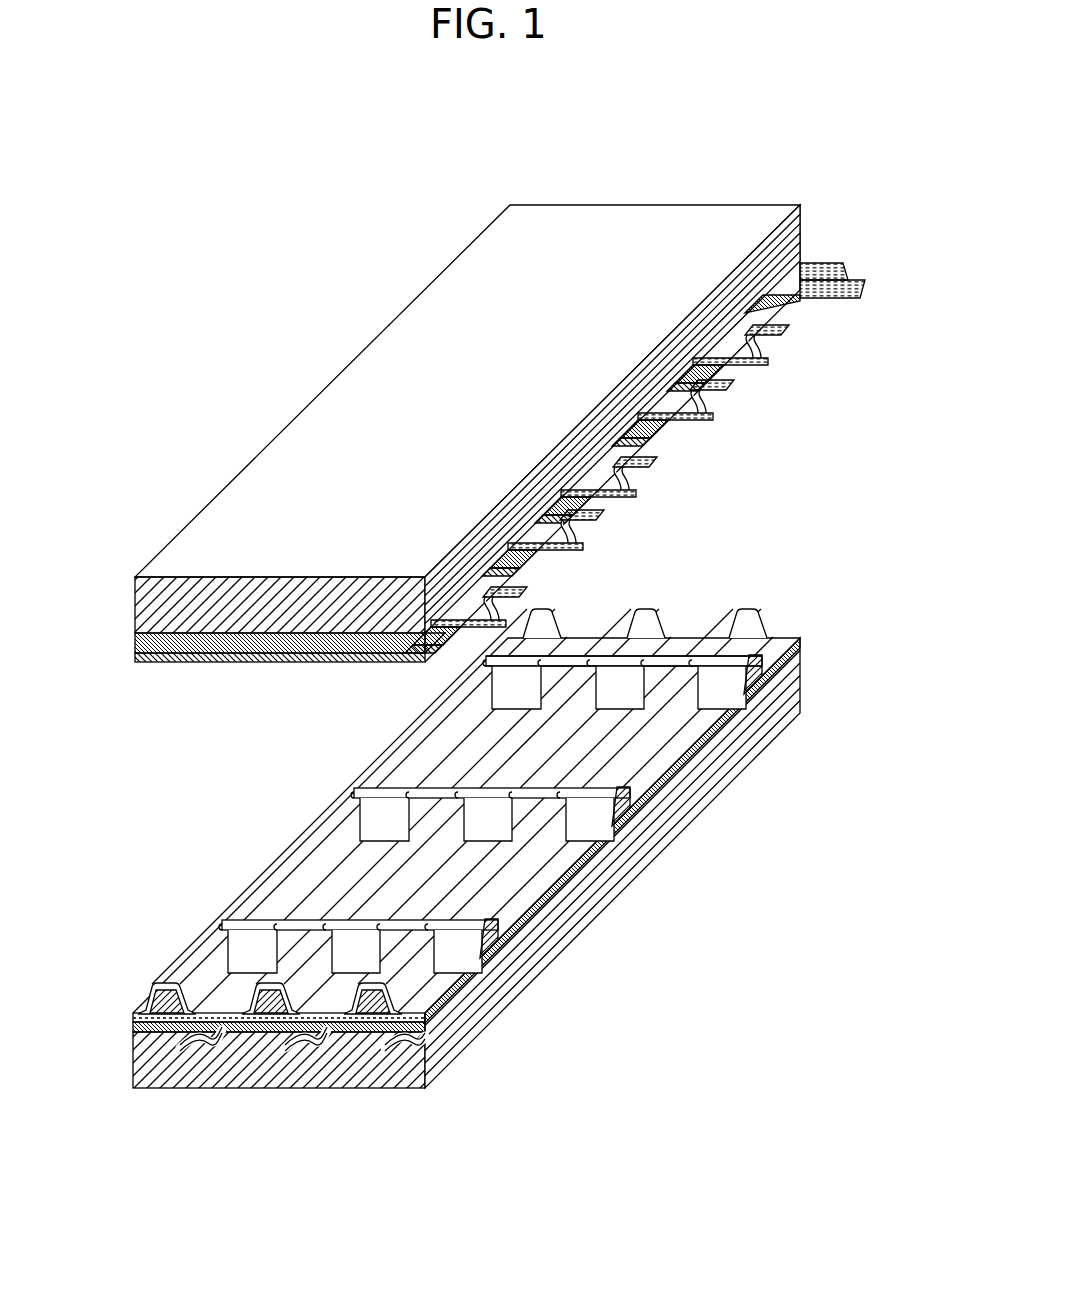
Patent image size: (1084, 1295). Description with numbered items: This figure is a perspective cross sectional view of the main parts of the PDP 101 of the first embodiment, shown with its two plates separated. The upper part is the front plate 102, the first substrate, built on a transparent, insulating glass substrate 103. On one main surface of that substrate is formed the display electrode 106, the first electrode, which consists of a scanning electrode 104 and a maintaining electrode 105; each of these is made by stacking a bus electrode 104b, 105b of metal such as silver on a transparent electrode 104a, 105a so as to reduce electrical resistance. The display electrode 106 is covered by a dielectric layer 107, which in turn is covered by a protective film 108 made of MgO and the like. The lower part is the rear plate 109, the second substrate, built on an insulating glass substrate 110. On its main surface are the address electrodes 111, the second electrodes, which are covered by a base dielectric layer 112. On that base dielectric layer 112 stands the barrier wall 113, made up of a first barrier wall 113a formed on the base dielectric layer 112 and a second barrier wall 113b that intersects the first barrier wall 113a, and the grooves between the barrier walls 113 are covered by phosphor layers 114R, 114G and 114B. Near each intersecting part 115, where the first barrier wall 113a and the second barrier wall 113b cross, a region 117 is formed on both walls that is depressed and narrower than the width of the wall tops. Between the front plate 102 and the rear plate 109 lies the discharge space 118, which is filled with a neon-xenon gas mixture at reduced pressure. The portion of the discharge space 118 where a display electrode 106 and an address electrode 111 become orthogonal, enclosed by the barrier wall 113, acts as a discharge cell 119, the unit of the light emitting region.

The PDP 101 is at (276, 422).
The front plate 102 is at (870, 207).
The glass substrate 103 is at (143, 603).
The scanning electrode 104 is at (810, 370).
The transparent electrode 104a is at (760, 360).
The bus electrode 104b is at (821, 341).
The maintaining electrode 105 is at (744, 442).
The transparent electrode 105a is at (758, 404).
The bus electrode 105b is at (730, 430).
The display electrode 106 is at (690, 445).
The dielectric layer 107 is at (140, 641).
The protective film 108 is at (138, 658).
The rear plate 109 is at (486, 867).
The glass substrate 110 is at (145, 1090).
The address electrode 111 is at (395, 1048).
The base dielectric layer 112 is at (138, 1027).
The barrier wall 113 is at (705, 749).
The first barrier wall 113a is at (735, 630).
The second barrier wall 113b is at (737, 665).
The phosphor layer 114R is at (150, 1000).
The phosphor layer 114G is at (257, 990).
The phosphor layer 114B is at (360, 990).
The intersecting part 115 is at (427, 918).
The region 117 is at (560, 755).
The discharge space 118 is at (692, 630).
The discharge cell 119 is at (580, 905).